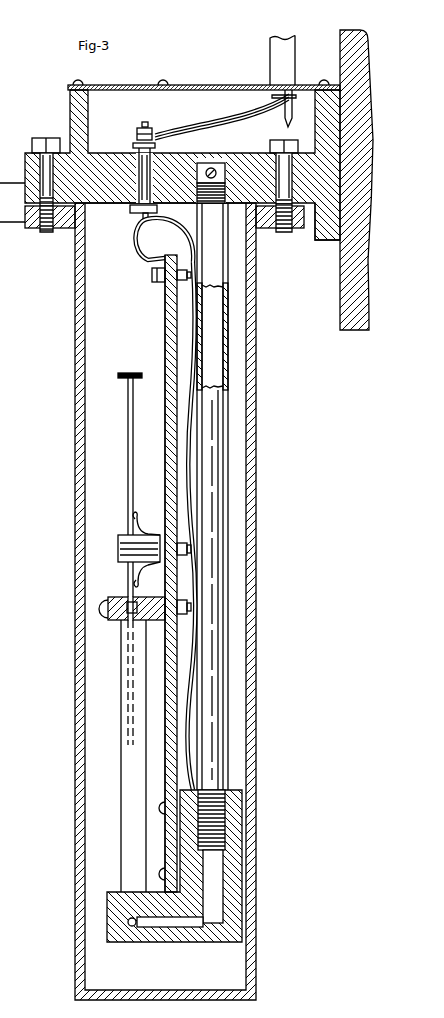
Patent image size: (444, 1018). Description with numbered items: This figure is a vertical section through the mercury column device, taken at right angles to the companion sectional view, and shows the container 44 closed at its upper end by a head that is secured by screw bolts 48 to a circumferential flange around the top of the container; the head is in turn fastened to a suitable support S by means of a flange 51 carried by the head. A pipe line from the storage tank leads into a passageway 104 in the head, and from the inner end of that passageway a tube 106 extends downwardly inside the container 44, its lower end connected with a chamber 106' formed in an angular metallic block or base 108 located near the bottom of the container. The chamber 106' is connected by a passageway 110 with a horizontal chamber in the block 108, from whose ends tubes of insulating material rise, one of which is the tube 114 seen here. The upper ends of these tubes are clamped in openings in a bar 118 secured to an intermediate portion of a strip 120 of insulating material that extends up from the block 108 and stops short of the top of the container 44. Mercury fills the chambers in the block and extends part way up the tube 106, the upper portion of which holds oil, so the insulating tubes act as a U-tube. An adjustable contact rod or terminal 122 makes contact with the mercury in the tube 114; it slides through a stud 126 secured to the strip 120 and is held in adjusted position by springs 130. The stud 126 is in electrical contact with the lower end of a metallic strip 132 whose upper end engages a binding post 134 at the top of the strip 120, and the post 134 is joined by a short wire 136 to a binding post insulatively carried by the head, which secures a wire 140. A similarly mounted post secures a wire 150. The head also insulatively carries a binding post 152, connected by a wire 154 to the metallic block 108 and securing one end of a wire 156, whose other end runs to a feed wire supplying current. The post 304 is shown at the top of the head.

The container 44 is at (257, 545).
The screw bolts 48 is at (47, 138).
The flange 51 is at (328, 240).
The passageway 104 is at (213, 172).
The tube 106 is at (250, 496).
The chamber 106' is at (258, 886).
The metallic block 108 is at (237, 894).
The passageway 110 is at (172, 926).
The tube of insulating material 114 is at (130, 804).
The bar 118 is at (108, 600).
The strip of insulating material 120 is at (165, 312).
The contact rod 122 is at (128, 508).
The stud 126 is at (118, 550).
The springs 130 is at (146, 520).
The metallic strip 132 is at (165, 352).
The binding post 134 is at (152, 276).
The short wire 136 is at (138, 246).
The wire 140 is at (244, 112).
The wire 150 is at (294, 110).
The binding post 152 is at (135, 150).
The wire 154 is at (195, 426).
The wire 156 is at (173, 132).
The post 304 is at (287, 52).
The support S is at (345, 333).